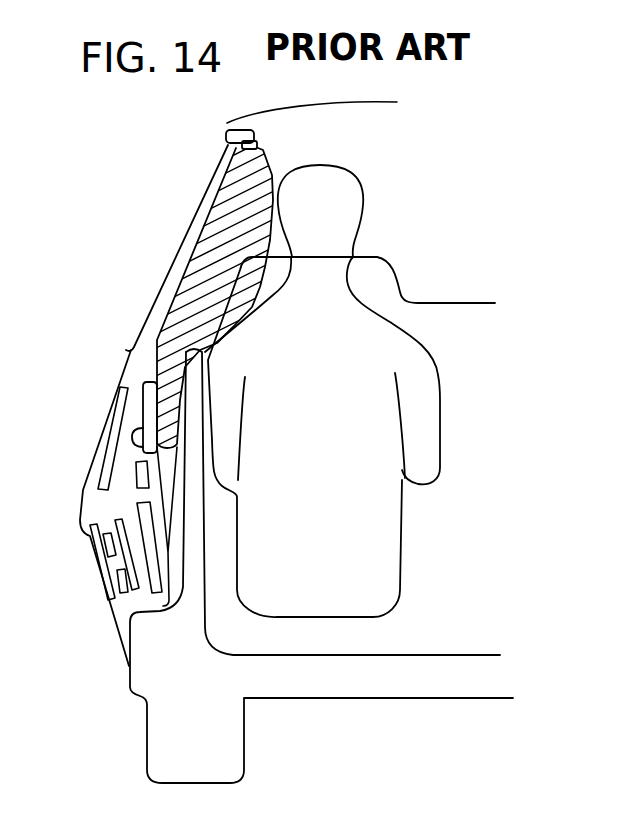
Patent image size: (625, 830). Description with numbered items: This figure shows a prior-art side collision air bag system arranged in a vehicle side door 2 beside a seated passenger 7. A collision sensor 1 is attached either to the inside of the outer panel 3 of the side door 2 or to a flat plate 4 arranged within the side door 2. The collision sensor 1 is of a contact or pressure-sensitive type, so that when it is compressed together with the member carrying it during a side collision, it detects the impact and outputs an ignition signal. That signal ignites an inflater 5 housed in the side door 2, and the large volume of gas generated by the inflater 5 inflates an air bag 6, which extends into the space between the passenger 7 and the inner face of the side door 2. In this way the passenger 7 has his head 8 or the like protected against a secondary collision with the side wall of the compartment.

The collision sensor 1 is at (112, 584).
The side door 2 is at (124, 340).
The outer panel 3 is at (86, 498).
The flat plate 4 is at (90, 533).
The inflater 5 is at (150, 415).
The air bag 6 is at (210, 232).
The passenger 7 is at (445, 362).
The head 8 is at (353, 207).